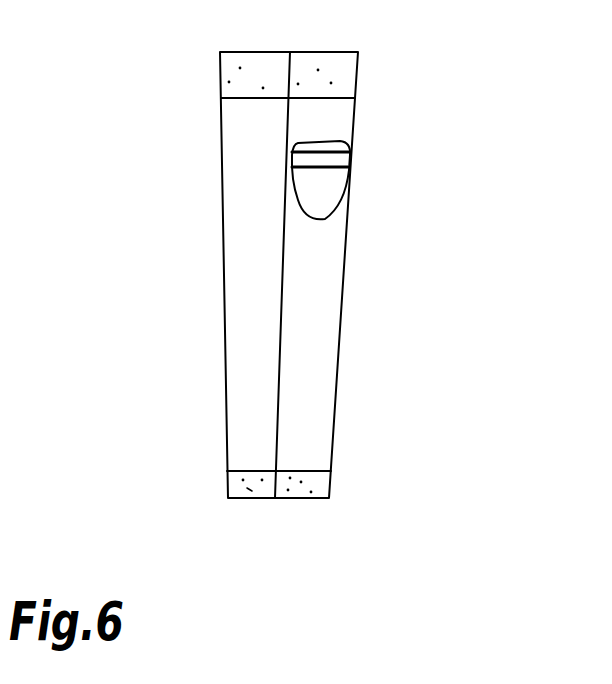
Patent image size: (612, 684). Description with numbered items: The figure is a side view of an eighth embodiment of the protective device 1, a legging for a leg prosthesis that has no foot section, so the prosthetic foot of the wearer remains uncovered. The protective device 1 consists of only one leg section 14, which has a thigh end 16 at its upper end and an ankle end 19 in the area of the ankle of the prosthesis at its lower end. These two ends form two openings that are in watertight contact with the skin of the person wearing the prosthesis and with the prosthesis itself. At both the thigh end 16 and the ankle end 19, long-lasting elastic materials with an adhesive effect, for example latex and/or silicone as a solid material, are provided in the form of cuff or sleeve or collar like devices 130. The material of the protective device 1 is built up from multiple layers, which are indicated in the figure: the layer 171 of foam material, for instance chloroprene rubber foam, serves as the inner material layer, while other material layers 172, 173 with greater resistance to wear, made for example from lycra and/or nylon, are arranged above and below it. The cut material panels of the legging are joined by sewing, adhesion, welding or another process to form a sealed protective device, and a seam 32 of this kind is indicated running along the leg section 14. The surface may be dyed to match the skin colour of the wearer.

The protective device 1 is at (160, 63).
The leg section 14 is at (205, 250).
The thigh end 16 is at (352, 76).
The ankle end 19 is at (229, 488).
The seam 32 is at (283, 346).
The cuff or sleeve or collar like devices 130 is at (356, 53).
The layer of foam material 171 is at (350, 156).
The material layer 172 is at (342, 143).
The material layer 173 is at (345, 171).